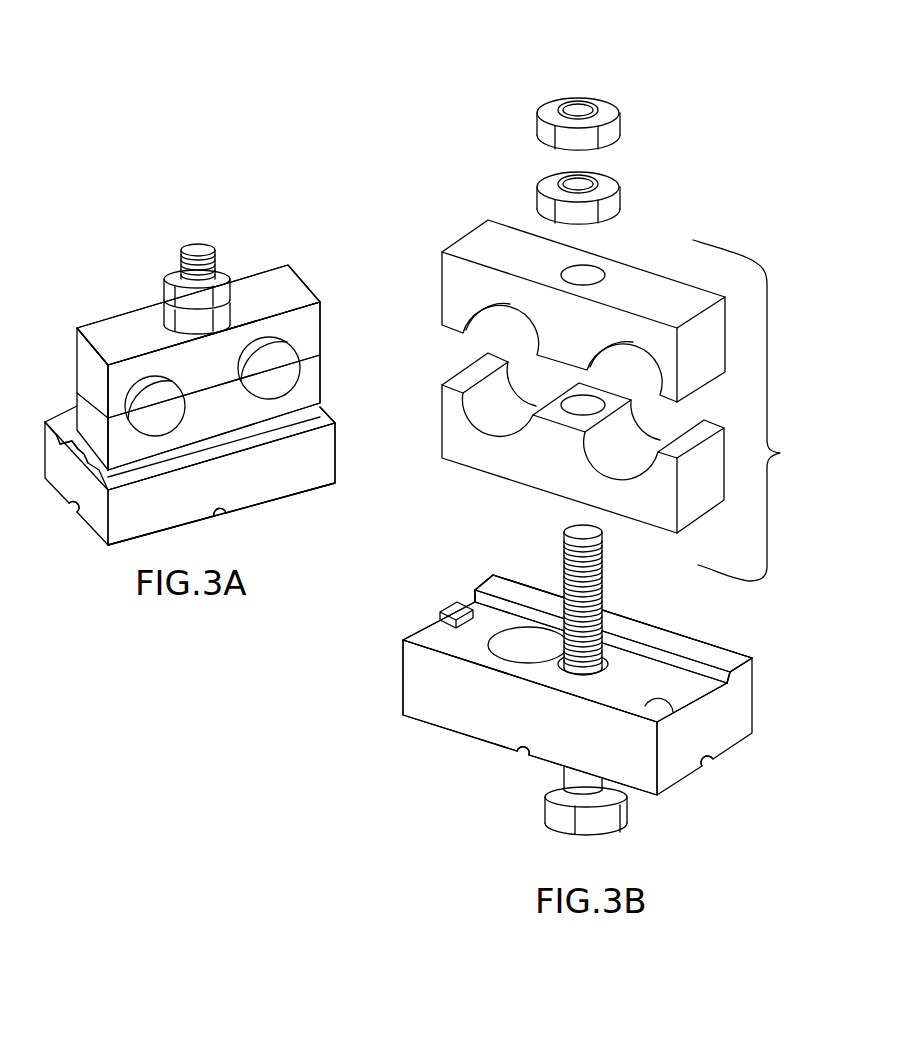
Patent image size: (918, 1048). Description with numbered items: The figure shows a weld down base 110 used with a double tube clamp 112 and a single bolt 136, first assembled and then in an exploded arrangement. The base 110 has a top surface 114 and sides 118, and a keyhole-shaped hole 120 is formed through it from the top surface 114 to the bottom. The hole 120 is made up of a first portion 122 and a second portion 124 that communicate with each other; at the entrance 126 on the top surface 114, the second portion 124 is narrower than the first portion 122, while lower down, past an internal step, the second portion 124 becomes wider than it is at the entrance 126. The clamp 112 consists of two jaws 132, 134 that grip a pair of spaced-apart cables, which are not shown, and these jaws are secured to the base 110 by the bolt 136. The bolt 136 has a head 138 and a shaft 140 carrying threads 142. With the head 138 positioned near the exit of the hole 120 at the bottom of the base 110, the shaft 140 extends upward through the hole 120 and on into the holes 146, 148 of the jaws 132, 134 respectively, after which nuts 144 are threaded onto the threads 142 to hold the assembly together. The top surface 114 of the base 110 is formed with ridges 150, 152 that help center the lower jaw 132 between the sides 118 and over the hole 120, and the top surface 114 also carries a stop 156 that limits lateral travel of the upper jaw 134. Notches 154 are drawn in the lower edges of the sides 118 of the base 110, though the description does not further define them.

In FIG. 3A, the base 110 is at (338, 440).
In FIG. 3B, the base 110 is at (400, 666).
In FIG. 3A, the clamp 112 is at (70, 370).
In FIG. 3B, the clamp 112 is at (780, 453).
In FIG. 3A, the top surface 114 is at (67, 422).
In FIG. 3B, the top surface 114 is at (422, 635).
In FIG. 3A, the sides 118 is at (297, 468).
In FIG. 3B, the sides 118 is at (460, 720).
In FIG. 3B, the hole 120 is at (548, 643).
In FIG. 3B, the first portion 122 is at (505, 645).
In FIG. 3B, the second portion 124 is at (559, 660).
In FIG. 3B, the entrance 126 is at (517, 622).
In FIG. 3A, the jaw 132 is at (308, 377).
In FIG. 3B, the jaw 132 is at (448, 417).
In FIG. 3A, the jaw 134 is at (310, 326).
In FIG. 3B, the jaw 134 is at (450, 275).
In FIG. 3B, the bolt 136 is at (543, 790).
In FIG. 3B, the head 138 is at (627, 805).
In FIG. 3B, the shaft 140 is at (604, 657).
In FIG. 3B, the threads 142 is at (601, 578).
In FIG. 3A, the nuts 144 is at (163, 310).
In FIG. 3B, the nuts 144 is at (538, 196).
In FIG. 3B, the hole 146 is at (580, 397).
In FIG. 3B, the hole 148 is at (587, 265).
In FIG. 3B, the ridge 150 is at (675, 705).
In FIG. 3B, the ridge 152 is at (692, 647).
In FIG. 3A, the notches 154 is at (75, 516).
In FIG. 3B, the notches 154 is at (522, 757).
In FIG. 3A, the stop 156 is at (78, 460).
In FIG. 3B, the stop 156 is at (450, 605).